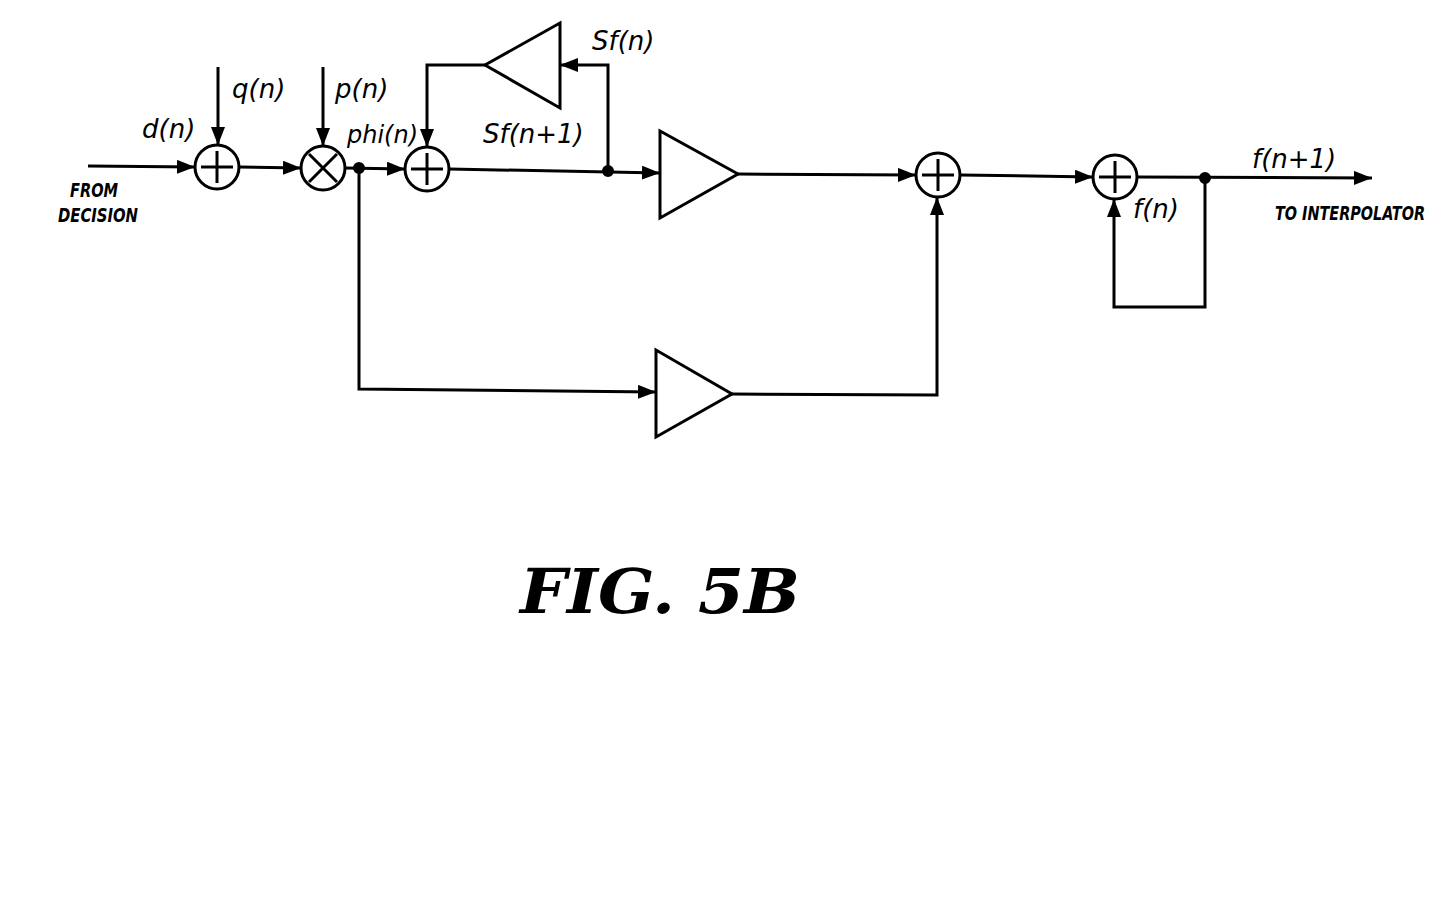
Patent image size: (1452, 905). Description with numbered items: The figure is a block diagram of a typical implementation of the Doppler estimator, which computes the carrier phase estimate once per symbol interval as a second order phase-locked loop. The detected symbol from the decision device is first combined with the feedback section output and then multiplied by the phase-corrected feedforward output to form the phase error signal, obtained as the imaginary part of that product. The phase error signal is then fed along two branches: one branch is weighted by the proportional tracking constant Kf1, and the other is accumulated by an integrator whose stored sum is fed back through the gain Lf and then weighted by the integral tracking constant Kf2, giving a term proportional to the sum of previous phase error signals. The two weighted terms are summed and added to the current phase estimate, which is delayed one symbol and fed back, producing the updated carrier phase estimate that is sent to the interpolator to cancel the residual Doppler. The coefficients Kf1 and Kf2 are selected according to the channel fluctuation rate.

The proportional tracking constant Kf1 is at (694, 393).
The integral tracking constant Kf2 is at (699, 174).
The loop gain Lf is at (522, 65).